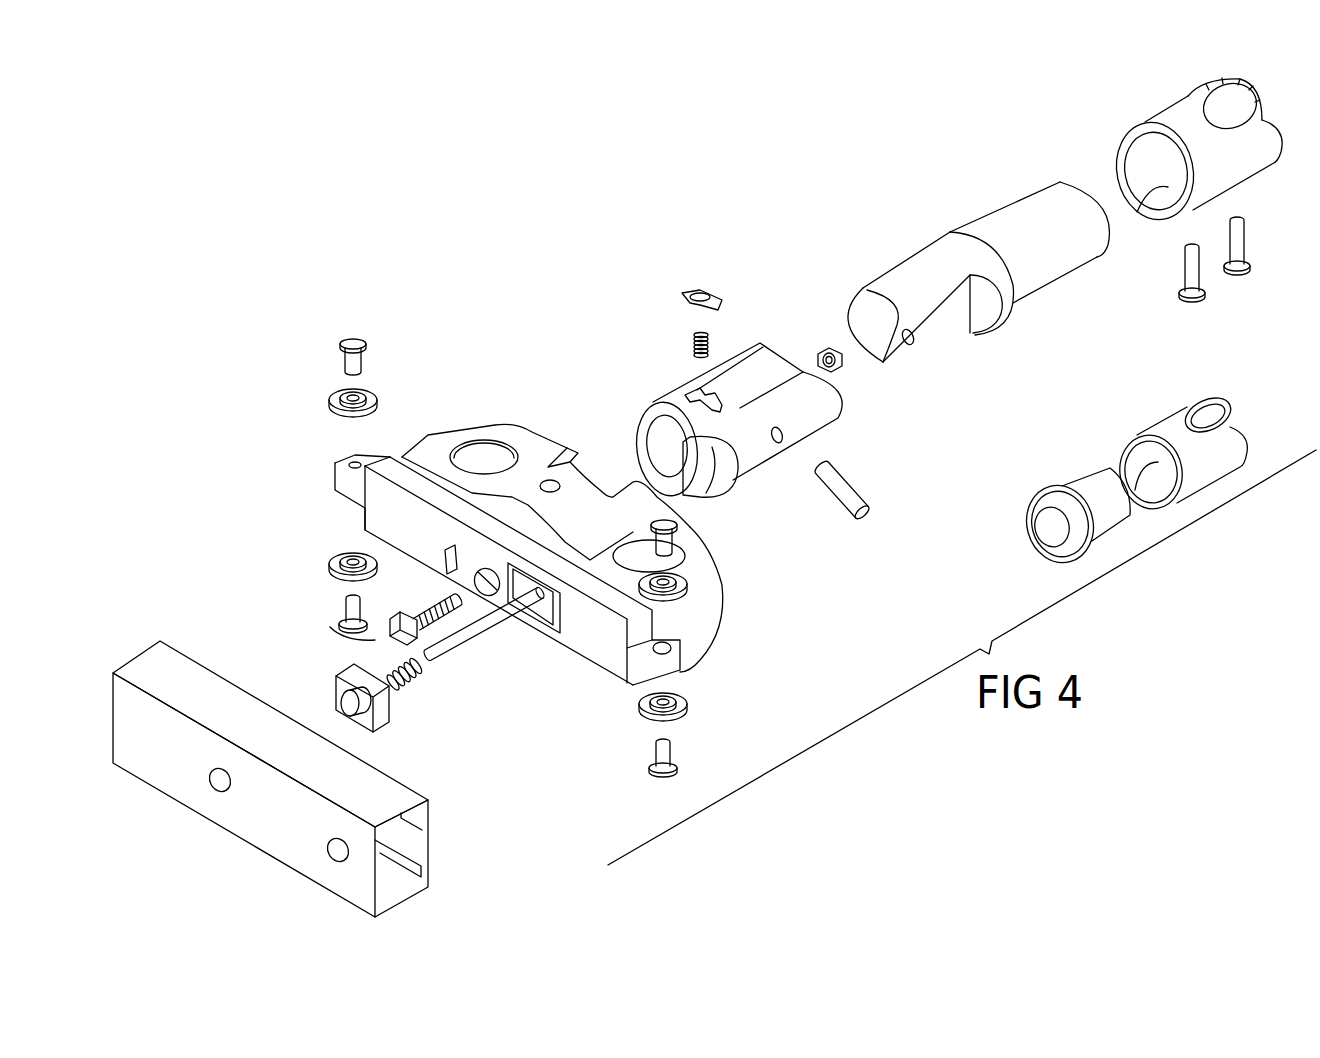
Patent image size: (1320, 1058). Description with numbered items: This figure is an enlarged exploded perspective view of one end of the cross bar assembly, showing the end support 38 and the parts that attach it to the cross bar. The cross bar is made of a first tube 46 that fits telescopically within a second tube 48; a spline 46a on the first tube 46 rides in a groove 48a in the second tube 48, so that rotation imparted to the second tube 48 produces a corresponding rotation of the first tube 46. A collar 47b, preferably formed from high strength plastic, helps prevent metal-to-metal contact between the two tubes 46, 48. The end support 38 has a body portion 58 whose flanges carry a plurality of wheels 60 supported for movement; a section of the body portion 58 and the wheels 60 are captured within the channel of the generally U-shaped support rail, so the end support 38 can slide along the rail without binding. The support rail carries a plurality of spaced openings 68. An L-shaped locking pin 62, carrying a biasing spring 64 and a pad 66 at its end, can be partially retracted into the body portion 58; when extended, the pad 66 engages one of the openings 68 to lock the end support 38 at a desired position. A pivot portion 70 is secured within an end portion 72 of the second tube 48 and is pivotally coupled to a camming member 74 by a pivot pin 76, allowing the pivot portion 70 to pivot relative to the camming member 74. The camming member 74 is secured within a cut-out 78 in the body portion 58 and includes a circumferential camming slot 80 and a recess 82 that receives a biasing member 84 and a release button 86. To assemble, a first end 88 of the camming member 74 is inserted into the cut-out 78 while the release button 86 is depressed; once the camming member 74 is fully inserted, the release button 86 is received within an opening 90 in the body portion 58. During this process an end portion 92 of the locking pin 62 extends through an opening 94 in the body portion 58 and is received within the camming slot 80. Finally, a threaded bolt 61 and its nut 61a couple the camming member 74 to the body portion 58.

The end support 38 is at (438, 825).
The first tube 46 is at (1165, 420).
The spline 46a is at (1143, 458).
The collar 47b is at (1087, 487).
The second tube 48 is at (1177, 114).
The groove 48a is at (1163, 190).
The body portion 58 is at (712, 620).
The wheels 60 is at (378, 400).
The threaded bolt 61 is at (340, 622).
The nut 61a is at (842, 372).
The L-shaped locking pin 62 is at (460, 645).
The biasing spring 64 is at (412, 688).
The pad 66 is at (347, 700).
The openings 68 is at (213, 786).
The pivot portion 70 is at (997, 222).
The end portion 72 is at (1172, 128).
The camming member 74 is at (820, 408).
The pivot pin 76 is at (868, 500).
The cut-out 78 is at (580, 452).
The circumferential camming slot 80 is at (728, 470).
The recess 82 is at (700, 386).
The biasing member 84 is at (712, 348).
The release button 86 is at (703, 293).
The first end 88 is at (640, 410).
The opening 90 is at (548, 481).
The end portion 92 is at (473, 617).
The opening 94 is at (530, 620).